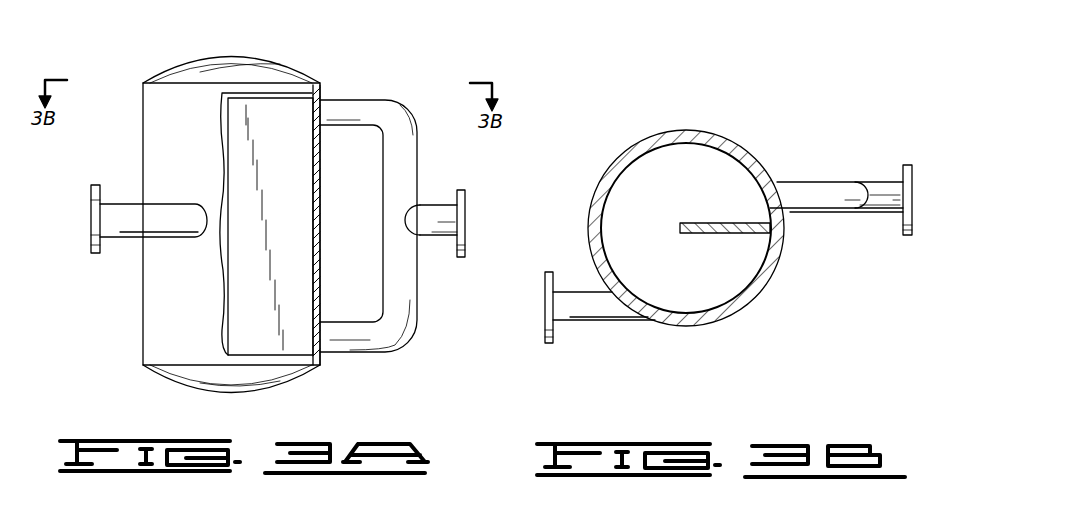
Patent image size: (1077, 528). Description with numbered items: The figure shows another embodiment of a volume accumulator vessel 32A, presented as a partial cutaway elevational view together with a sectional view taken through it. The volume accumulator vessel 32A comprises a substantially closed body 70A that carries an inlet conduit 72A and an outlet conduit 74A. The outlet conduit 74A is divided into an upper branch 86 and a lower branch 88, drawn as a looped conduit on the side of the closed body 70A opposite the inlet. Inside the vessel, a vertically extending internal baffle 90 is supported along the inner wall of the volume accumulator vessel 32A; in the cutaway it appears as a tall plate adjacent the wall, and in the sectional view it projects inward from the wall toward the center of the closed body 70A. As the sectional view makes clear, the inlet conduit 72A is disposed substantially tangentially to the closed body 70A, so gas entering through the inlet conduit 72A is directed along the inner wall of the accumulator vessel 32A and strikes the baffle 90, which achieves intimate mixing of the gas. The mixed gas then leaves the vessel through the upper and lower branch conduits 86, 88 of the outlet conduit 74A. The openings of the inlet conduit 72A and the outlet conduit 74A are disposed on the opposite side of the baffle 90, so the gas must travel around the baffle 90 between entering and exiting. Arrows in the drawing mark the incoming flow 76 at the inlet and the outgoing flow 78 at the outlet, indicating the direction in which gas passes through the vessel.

In FIG. 3A, the volume accumulator vessel 32A is at (152, 70).
In FIG. 3B, the volume accumulator vessel 32A is at (656, 124).
In FIG. 3A, the closed body 70A is at (152, 332).
In FIG. 3B, the closed body 70A is at (612, 156).
In FIG. 3A, the inlet conduit 72A is at (93, 254).
In FIG. 3B, the inlet conduit 72A is at (549, 344).
In FIG. 3A, the outlet conduit 74A is at (433, 210).
In FIG. 3B, the outlet conduit 74A is at (886, 213).
In FIG. 3A, the inlet flow 76 is at (85, 220).
In FIG. 3B, the inlet flow 76 is at (533, 305).
In FIG. 3A, the outlet flow / flange 78 is at (520, 222).
In FIG. 3B, the outlet flow / flange 78 is at (940, 200).
In FIG. 3A, the upper branch 86 is at (368, 108).
In FIG. 3B, the upper branch 86 is at (796, 190).
In FIG. 3A, the lower branch 88 is at (366, 337).
In FIG. 3A, the internal baffle 90 is at (270, 225).
In FIG. 3B, the internal baffle 90 is at (704, 222).